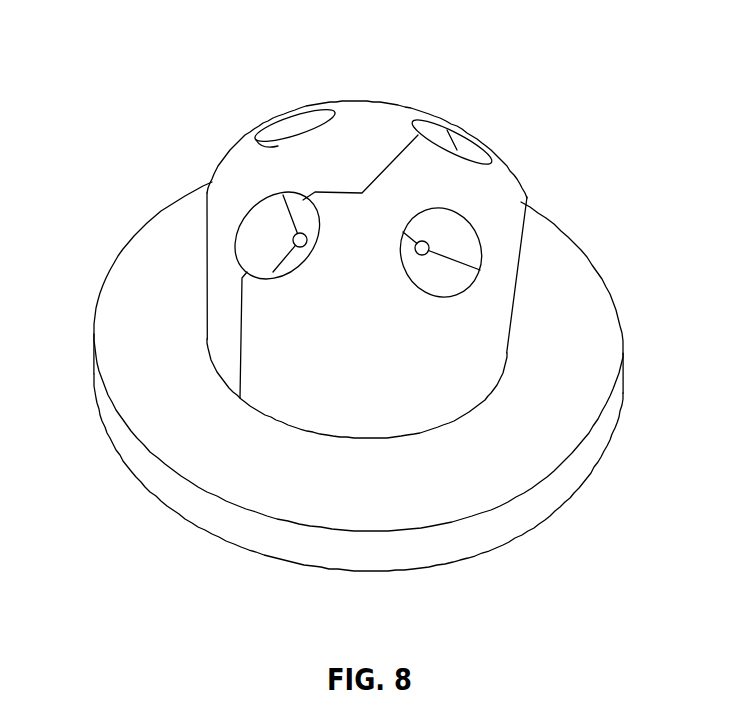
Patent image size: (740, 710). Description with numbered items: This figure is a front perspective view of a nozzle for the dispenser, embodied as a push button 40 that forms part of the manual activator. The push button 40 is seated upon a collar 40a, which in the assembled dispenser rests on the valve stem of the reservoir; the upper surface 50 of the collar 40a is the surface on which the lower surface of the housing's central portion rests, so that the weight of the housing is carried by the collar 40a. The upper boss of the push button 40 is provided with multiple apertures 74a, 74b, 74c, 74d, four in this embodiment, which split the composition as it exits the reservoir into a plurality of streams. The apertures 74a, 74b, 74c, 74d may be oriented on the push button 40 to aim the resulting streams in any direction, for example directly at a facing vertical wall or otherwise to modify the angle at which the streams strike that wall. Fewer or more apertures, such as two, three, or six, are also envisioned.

The push button 40 is at (160, 55).
The collar 40a is at (119, 433).
The upper surface 50 is at (128, 308).
The aperture 74a is at (286, 240).
The aperture 74b is at (278, 128).
The aperture 74c is at (464, 146).
The aperture 74d is at (437, 246).